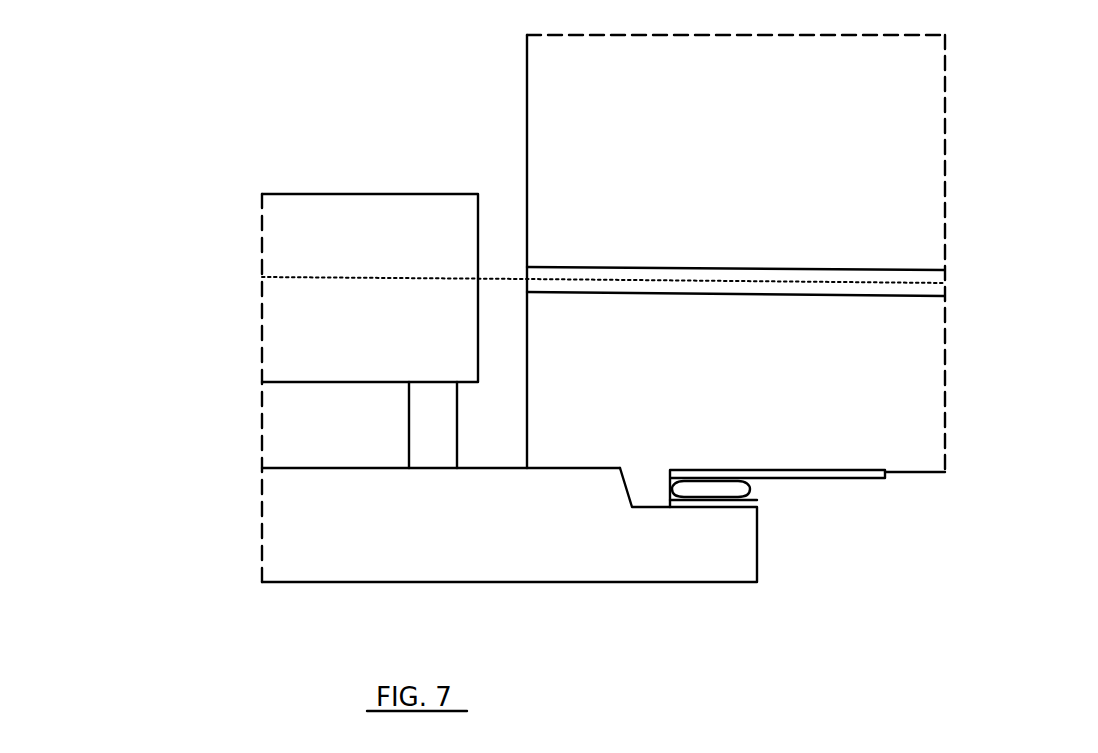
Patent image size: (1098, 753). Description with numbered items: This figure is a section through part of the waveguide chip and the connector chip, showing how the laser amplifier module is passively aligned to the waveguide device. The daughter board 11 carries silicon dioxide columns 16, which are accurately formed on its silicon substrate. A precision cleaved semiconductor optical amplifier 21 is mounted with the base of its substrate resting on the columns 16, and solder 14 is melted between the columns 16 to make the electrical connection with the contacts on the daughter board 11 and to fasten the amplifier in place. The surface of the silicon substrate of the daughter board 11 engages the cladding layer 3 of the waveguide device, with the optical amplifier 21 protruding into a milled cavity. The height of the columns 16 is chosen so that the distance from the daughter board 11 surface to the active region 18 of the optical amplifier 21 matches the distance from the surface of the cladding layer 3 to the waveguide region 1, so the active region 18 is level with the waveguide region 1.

The waveguide region 1 is at (945, 281).
The cladding layer 3 is at (915, 368).
The daughter board 11 is at (285, 511).
The solder 14 is at (295, 400).
The silicon dioxide columns 16 is at (424, 412).
The active region 18 is at (305, 276).
The semiconductor optical amplifier 21 is at (307, 218).